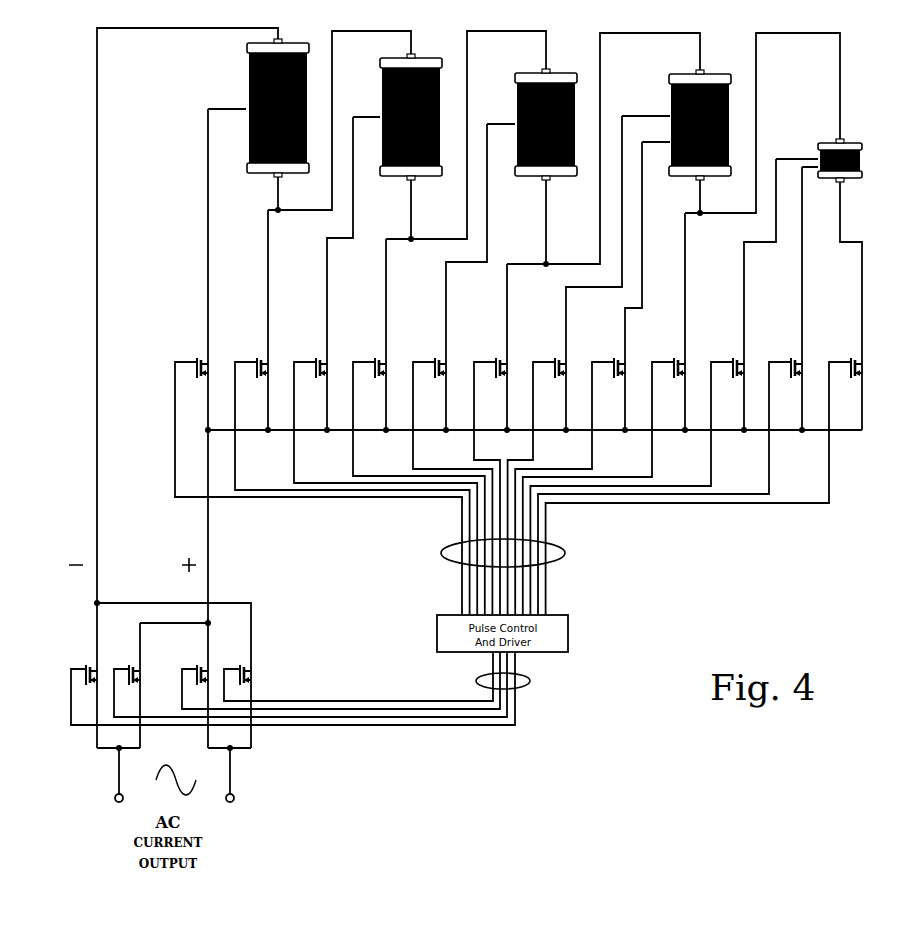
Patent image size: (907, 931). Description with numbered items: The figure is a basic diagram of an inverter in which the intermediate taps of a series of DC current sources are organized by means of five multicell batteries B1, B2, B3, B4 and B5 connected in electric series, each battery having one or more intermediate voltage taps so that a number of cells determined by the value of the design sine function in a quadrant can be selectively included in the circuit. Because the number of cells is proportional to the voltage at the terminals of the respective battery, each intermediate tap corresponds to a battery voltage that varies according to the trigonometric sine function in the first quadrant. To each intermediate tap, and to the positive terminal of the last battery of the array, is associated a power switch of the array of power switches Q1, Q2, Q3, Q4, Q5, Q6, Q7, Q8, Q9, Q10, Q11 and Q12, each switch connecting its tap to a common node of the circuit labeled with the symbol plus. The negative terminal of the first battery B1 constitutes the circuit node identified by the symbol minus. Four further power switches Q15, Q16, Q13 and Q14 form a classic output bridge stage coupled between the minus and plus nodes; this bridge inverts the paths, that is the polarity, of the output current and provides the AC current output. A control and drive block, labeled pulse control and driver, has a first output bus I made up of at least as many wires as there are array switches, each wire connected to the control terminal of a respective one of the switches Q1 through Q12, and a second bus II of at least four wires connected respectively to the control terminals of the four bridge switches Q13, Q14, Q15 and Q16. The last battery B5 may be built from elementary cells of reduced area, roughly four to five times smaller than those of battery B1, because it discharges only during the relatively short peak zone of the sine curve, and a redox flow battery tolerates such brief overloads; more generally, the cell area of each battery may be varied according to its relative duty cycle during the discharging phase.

The multicell battery B1 is at (261, 108).
The multicell battery B2 is at (402, 110).
The multicell battery B3 is at (537, 117).
The multicell battery B4 is at (692, 117).
The multicell battery B5 is at (835, 152).
The power switch Q1 is at (317, 479).
The power switch Q2 is at (351, 479).
The power switch Q3 is at (384, 479).
The power switch Q4 is at (417, 479).
The power switch Q5 is at (451, 479).
The power switch Q6 is at (489, 479).
The power switch Q7 is at (537, 479).
The power switch Q8 is at (570, 479).
The power switch Q9 is at (604, 479).
The power switch Q10 is at (637, 479).
The power switch Q11 is at (670, 479).
The power switch Q12 is at (704, 479).
The power switch Q13 is at (339, 679).
The power switch Q14 is at (356, 675).
The power switch Q15 is at (290, 687).
The power switch Q16 is at (308, 683).
The first output bus I is at (515, 553).
The second bus II is at (519, 681).